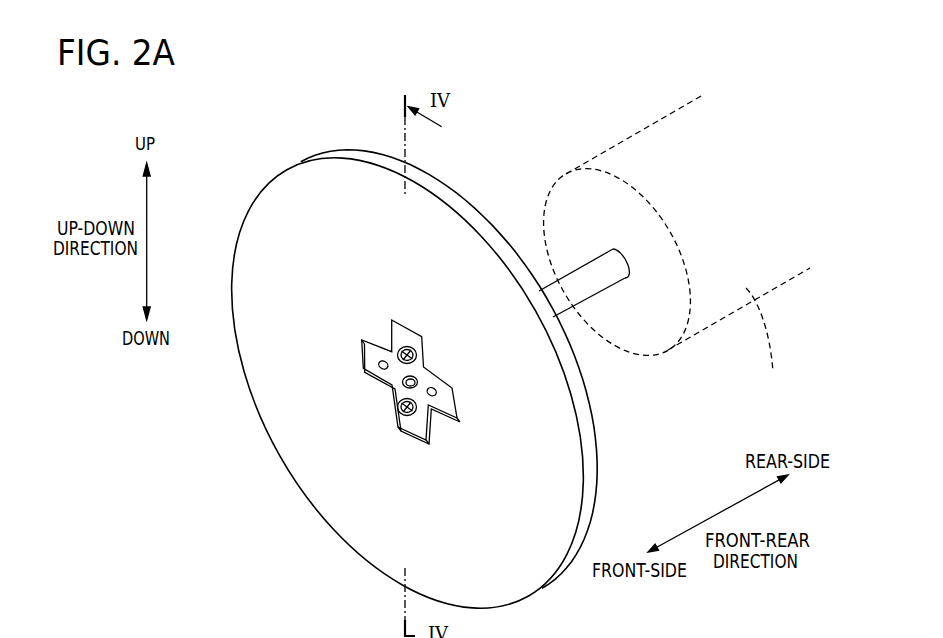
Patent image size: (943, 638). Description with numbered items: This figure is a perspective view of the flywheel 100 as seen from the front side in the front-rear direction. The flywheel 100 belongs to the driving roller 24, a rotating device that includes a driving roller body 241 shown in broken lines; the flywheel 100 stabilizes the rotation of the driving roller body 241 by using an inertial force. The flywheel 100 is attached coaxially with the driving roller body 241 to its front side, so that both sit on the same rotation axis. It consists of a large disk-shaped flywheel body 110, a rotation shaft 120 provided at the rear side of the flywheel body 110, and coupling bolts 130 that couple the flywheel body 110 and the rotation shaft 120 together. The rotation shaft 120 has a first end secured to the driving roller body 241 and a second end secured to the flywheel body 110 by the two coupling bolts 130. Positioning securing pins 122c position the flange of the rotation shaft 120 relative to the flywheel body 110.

The flywheel 100 is at (405, 353).
The flywheel body 110 is at (262, 449).
The rotation shaft 120 is at (576, 328).
The positioning securing pins 122c is at (437, 392).
The coupling bolts 130 is at (350, 376).
The driving roller 24 is at (661, 233).
The driving roller body 241 is at (774, 346).